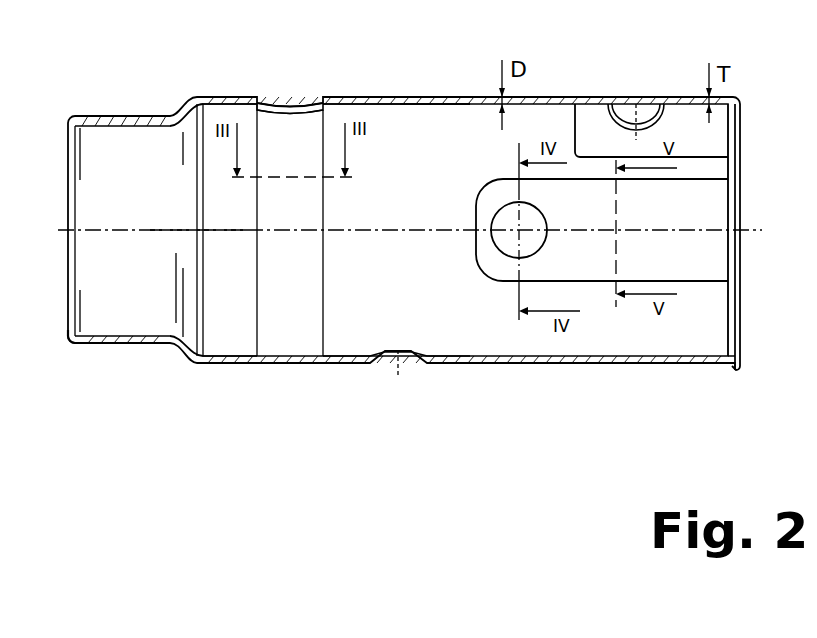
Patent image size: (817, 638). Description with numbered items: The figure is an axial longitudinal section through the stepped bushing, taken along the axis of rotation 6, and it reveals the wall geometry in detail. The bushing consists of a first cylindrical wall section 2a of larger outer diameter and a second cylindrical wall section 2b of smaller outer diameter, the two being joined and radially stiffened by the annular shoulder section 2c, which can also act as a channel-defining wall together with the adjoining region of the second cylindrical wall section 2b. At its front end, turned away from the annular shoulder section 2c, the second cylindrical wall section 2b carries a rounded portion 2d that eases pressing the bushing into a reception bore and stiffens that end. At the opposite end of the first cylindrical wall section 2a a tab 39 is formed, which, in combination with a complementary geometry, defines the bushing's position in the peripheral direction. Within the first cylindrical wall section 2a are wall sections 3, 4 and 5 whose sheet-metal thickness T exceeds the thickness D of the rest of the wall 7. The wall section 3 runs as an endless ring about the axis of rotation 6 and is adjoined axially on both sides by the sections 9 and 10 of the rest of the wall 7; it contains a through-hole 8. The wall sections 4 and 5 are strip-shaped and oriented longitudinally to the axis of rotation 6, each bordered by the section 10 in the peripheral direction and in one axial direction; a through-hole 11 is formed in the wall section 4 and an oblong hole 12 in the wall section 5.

The first cylindrical wall section 2a is at (490, 393).
The second cylindrical wall section 2b is at (118, 122).
The annular shoulder section 2c is at (181, 96).
The rounded portion 2d is at (72, 341).
The wall section 3 is at (273, 133).
The through-hole 8 is at (298, 104).
The rest of the wall 7 is at (375, 140).
The section of the rest of the wall 10 is at (438, 128).
The section of the rest of the wall 9 is at (232, 230).
The wall section 4 is at (487, 213).
The through-hole 11 is at (508, 215).
The wall section 5 is at (592, 117).
The oblong hole 12 is at (635, 122).
The axis of rotation 6 is at (712, 228).
The tab 39 is at (737, 372).